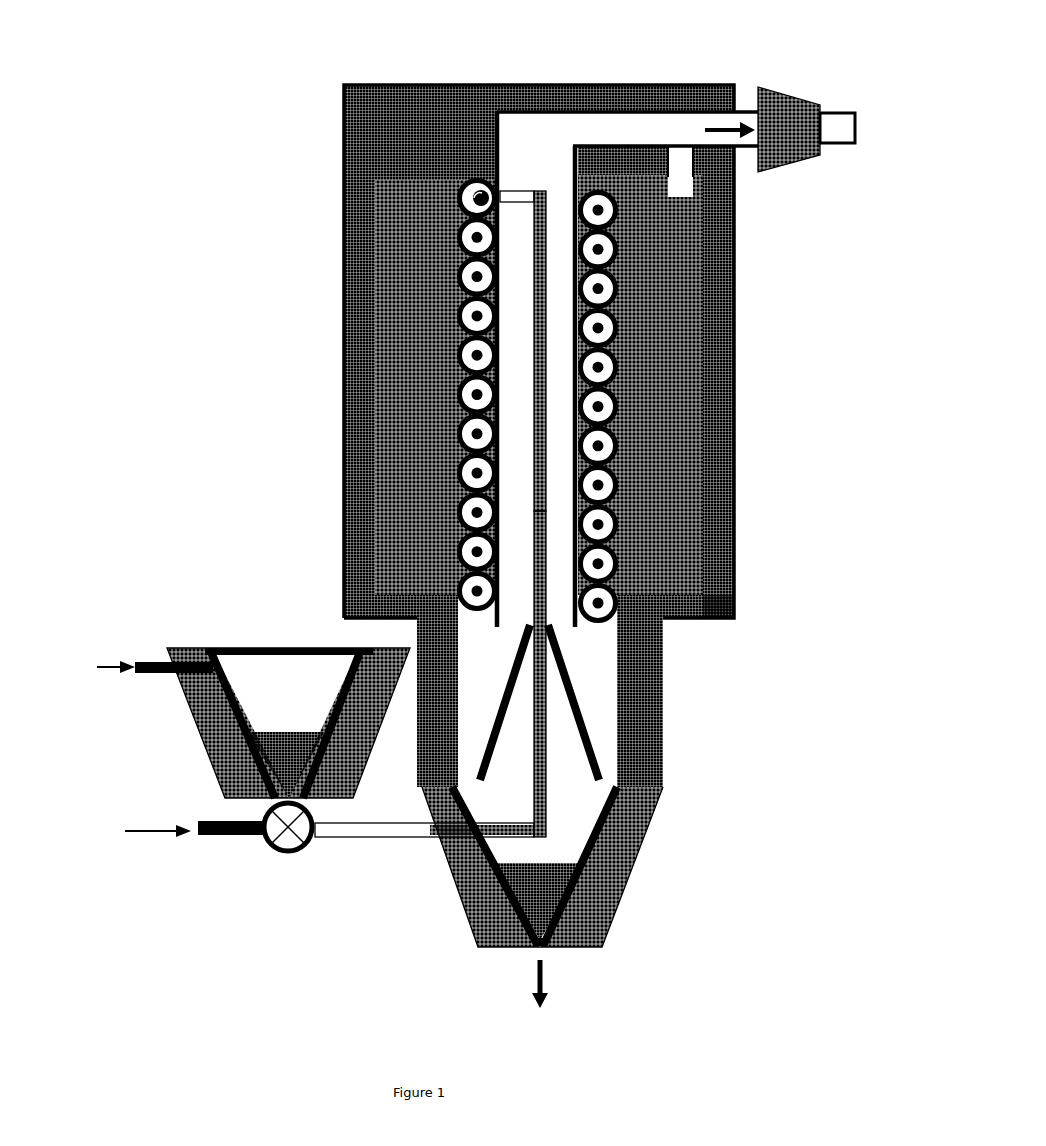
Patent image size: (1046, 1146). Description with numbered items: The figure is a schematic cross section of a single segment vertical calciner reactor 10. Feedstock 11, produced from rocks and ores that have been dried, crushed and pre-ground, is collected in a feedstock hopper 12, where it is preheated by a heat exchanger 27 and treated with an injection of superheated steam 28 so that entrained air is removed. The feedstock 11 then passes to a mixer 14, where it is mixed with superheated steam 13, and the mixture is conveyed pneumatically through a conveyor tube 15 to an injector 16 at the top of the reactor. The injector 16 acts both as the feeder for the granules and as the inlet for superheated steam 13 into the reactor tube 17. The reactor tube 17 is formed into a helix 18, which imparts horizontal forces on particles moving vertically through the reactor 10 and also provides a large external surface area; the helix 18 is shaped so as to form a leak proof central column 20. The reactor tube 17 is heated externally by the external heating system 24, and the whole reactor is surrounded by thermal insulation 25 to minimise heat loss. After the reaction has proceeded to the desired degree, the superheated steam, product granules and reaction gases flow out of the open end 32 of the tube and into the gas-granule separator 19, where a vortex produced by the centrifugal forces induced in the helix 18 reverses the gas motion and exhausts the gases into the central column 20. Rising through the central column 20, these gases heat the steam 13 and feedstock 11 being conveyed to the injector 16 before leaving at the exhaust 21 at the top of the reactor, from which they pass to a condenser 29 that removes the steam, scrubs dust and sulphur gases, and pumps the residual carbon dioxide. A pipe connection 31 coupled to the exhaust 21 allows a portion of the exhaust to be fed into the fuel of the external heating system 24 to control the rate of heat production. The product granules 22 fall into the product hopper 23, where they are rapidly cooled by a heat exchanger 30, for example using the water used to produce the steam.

The calciner reactor 10 is at (560, 564).
The feedstock 11 is at (290, 745).
The feedstock hopper 12 is at (262, 630).
The superheated steam 13 is at (191, 820).
The mixer 14 is at (283, 858).
The conveyor tube 15 is at (537, 355).
The injector 16 is at (476, 196).
The reactor tube 17 is at (476, 240).
The helix 18 is at (468, 287).
The gas-granule separator 19 is at (580, 688).
The central column 20 is at (560, 440).
The exhaust 21 is at (683, 128).
The product granules 22 is at (545, 902).
The hopper 23 is at (510, 913).
The external heating system 24 is at (425, 368).
The thermal insulation 25 is at (362, 456).
The heat exchanger 27 is at (208, 708).
The superheated steam 28 is at (141, 655).
The condenser 29 is at (796, 82).
The heat exchanger 30 is at (640, 868).
The pipe connection 31 is at (682, 173).
The open end 32 is at (600, 606).